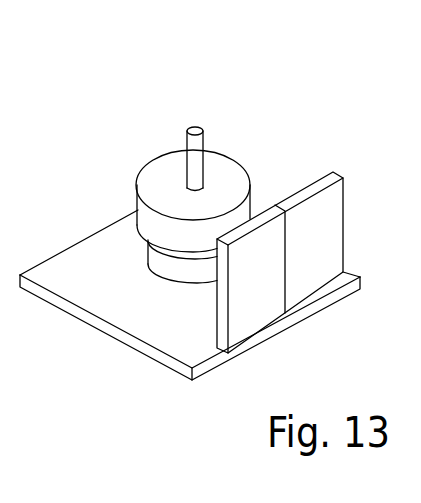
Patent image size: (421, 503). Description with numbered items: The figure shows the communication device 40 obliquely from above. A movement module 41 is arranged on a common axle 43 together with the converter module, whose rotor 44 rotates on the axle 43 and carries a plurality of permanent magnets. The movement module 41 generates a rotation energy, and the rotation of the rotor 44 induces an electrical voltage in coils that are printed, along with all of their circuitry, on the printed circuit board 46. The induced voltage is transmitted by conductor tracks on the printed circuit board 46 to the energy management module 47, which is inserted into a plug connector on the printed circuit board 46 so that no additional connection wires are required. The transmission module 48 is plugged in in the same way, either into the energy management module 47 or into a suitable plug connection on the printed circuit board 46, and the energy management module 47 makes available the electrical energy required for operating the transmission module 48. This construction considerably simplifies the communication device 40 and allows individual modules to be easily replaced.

The communication device 40 is at (242, 90).
The movement module 41 is at (227, 186).
The axle 43 is at (197, 143).
The rotor 44 is at (160, 258).
The printed circuit board 46 is at (140, 325).
The energy management module 47 is at (320, 290).
The transmission module 48 is at (257, 310).